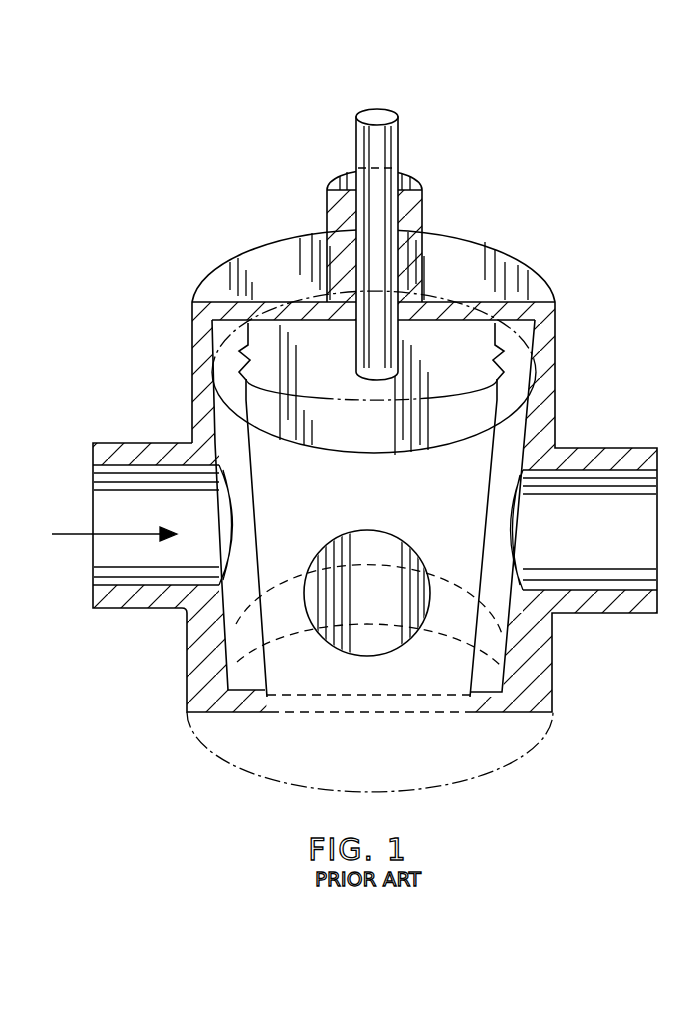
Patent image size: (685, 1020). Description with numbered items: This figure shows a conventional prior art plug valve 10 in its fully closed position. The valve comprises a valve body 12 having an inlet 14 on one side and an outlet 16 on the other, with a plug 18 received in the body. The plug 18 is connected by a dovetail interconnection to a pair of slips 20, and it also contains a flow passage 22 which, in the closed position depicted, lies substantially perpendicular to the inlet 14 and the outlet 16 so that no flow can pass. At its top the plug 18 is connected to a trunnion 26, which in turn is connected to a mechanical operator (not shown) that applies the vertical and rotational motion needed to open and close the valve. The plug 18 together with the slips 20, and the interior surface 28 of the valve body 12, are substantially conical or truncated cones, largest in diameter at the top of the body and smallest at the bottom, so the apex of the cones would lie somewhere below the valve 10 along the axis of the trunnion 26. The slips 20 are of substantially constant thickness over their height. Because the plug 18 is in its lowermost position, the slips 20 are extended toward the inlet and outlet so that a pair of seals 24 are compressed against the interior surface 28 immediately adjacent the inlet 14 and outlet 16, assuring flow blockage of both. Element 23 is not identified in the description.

The plug valve 10 is at (203, 221).
The valve body 12 is at (218, 292).
The inlet 14 is at (168, 443).
The outlet 16 is at (608, 448).
The plug 18 is at (278, 668).
The slips 20 is at (238, 372).
The flow passage 22 is at (398, 634).
The lower seat 23 is at (262, 648).
The seals 24 is at (237, 632).
The trunnion 26 is at (368, 112).
The interior surface 28 is at (533, 393).